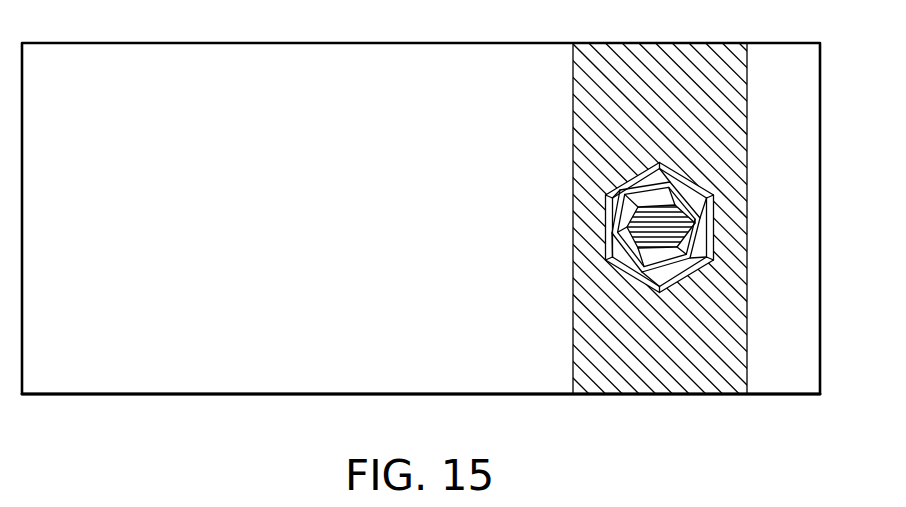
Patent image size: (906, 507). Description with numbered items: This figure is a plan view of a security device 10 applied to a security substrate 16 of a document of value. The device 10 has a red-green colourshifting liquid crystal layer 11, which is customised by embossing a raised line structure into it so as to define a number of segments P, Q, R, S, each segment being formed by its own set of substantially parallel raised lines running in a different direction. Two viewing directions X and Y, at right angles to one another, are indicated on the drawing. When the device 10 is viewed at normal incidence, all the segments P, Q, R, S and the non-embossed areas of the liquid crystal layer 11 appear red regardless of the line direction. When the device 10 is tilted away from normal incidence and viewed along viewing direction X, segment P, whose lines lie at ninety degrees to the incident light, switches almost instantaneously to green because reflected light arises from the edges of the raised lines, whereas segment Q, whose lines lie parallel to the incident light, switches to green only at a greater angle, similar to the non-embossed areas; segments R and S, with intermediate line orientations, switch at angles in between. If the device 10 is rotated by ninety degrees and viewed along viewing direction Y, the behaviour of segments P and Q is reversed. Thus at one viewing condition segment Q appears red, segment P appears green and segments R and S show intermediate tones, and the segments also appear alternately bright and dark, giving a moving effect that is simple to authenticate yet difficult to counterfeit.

The security device 10 is at (703, 43).
The liquid crystal layer 11 is at (730, 330).
The security substrate 16 is at (60, 395).
The viewing direction X is at (659, 152).
The viewing direction Y is at (596, 233).
The segment P is at (623, 256).
The segment Q is at (663, 165).
The segment R is at (712, 219).
The segment S is at (633, 200).